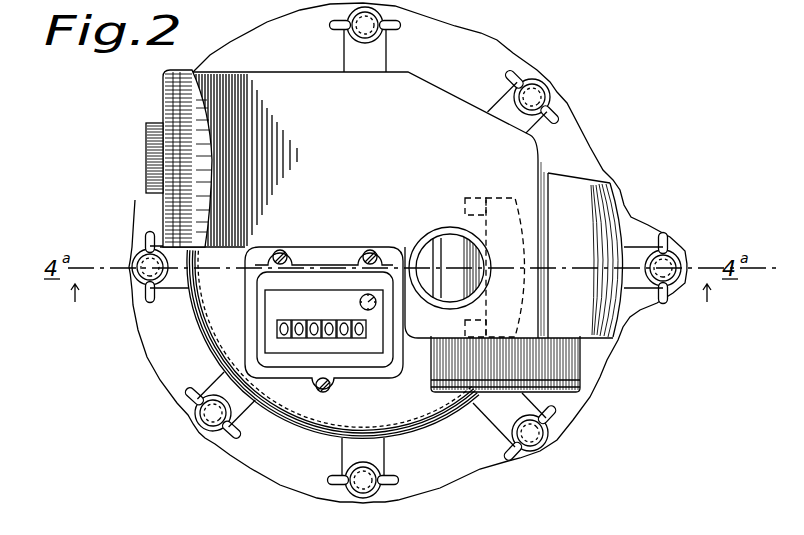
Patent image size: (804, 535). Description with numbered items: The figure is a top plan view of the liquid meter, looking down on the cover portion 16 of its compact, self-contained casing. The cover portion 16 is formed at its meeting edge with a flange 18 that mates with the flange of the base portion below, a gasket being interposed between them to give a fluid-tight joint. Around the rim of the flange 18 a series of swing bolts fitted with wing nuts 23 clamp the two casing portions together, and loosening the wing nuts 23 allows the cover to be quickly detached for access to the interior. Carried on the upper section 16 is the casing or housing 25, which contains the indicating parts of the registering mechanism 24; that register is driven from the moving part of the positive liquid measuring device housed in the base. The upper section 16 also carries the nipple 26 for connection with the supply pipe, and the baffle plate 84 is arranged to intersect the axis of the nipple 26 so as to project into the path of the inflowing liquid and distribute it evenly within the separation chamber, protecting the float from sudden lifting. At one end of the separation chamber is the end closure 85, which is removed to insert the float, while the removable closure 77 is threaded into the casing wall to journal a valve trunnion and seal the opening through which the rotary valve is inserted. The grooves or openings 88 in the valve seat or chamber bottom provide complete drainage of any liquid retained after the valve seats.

The cover portion 16 is at (221, 300).
The flange 18 is at (274, 440).
The wing nuts 23 is at (203, 427).
The registering mechanism 24 is at (320, 356).
The casing or housing 25 is at (383, 375).
The nipple 26 is at (449, 228).
The removable closure 77 is at (582, 394).
The baffle plate 84 is at (436, 250).
The end closure 85 is at (172, 90).
The grooves or openings 88 is at (477, 206).